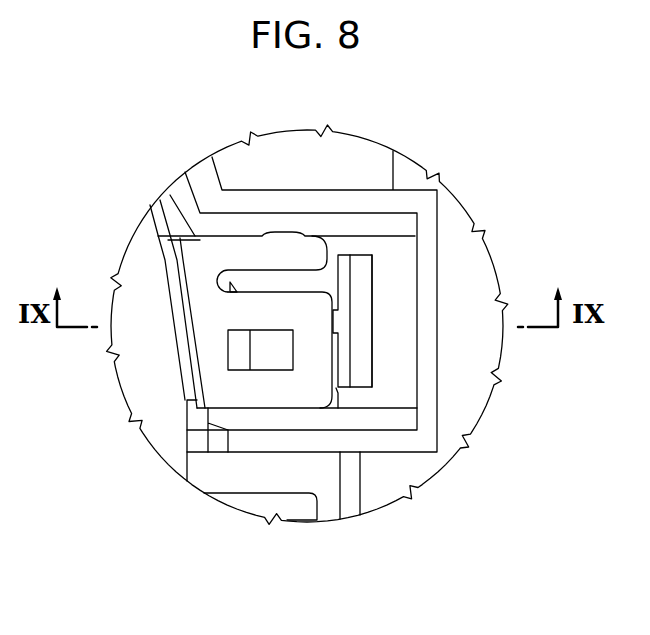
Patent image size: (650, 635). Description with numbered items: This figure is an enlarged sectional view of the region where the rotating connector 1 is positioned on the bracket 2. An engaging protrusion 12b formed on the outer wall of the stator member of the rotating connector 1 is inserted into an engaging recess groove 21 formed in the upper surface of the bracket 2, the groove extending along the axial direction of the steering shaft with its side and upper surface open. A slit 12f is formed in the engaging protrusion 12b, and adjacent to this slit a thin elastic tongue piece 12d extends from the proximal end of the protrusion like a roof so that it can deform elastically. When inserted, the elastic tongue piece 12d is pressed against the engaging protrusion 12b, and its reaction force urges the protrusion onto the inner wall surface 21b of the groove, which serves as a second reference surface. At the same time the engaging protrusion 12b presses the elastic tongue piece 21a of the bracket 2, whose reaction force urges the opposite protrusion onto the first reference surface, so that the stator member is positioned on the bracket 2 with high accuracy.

The rotating connector 1 is at (165, 442).
The bracket 2 is at (400, 466).
The engaging protrusion 12b is at (222, 307).
The elastic tongue piece 12d is at (285, 235).
The slit 12f is at (300, 281).
The engaging recess groove 21 is at (224, 240).
The elastic tongue piece 21a is at (362, 310).
The inner wall surface 21b is at (298, 406).